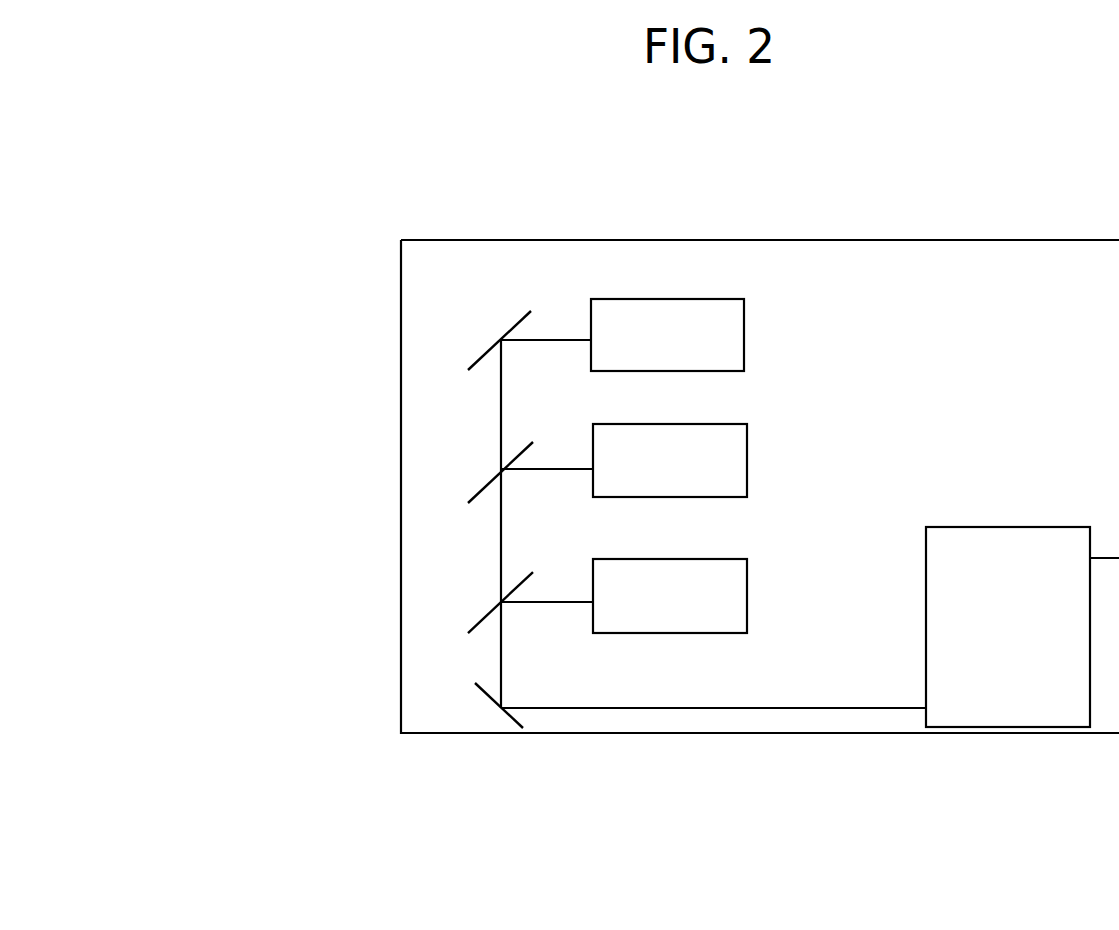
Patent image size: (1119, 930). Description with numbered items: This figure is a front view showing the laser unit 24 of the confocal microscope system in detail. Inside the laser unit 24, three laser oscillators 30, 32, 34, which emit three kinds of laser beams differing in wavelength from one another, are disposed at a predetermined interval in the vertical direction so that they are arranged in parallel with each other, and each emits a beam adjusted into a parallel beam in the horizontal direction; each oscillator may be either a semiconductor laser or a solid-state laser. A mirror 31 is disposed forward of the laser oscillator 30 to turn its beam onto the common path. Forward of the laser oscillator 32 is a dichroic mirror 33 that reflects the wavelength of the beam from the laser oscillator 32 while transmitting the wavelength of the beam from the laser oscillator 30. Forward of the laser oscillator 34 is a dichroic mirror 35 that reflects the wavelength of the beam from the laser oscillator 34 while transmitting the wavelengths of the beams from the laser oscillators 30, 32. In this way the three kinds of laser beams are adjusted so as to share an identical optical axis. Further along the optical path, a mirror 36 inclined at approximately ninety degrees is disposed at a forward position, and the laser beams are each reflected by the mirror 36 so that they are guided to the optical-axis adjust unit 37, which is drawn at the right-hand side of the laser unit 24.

The laser unit 24 is at (713, 255).
The laser oscillator 30 is at (745, 325).
The mirror 31 is at (469, 358).
The laser oscillator 32 is at (748, 468).
The dichroic mirror 33 is at (480, 481).
The laser oscillator 34 is at (748, 582).
The dichroic mirror 35 is at (476, 619).
The mirror 36 is at (508, 718).
The optical-axis adjust unit 37 is at (1017, 728).